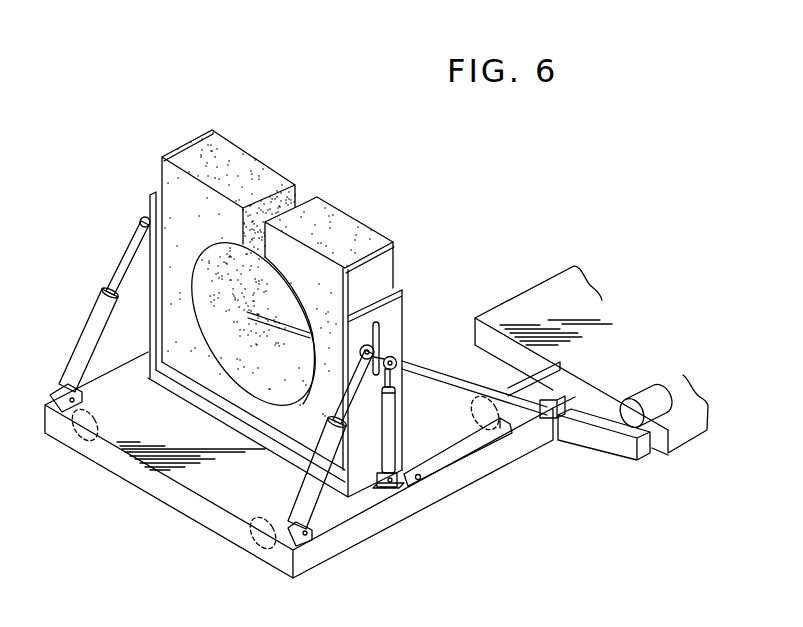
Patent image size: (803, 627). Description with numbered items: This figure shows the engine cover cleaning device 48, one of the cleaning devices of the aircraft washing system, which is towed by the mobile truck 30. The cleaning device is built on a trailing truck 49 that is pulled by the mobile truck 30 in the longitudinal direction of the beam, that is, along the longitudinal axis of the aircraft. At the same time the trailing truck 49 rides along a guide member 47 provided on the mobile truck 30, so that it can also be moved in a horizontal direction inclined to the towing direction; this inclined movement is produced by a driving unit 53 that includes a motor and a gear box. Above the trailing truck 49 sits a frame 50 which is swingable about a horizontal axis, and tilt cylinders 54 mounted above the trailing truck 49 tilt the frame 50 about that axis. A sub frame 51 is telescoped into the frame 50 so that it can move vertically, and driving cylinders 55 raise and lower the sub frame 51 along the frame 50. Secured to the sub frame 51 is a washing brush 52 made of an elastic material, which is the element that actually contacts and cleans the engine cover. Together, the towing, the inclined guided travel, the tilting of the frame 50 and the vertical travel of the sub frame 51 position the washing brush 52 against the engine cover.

The mobile truck 30 is at (523, 307).
The guide member 47 is at (610, 445).
The engine cover cleaning device 48 is at (173, 141).
The trailing truck 49 is at (368, 527).
The frame 50 is at (397, 320).
The sub frame 51 is at (383, 272).
The washing brush 52 is at (343, 228).
The driving unit 53 is at (640, 398).
The tilt cylinders 54 is at (303, 497).
The driving cylinders 55 is at (397, 445).